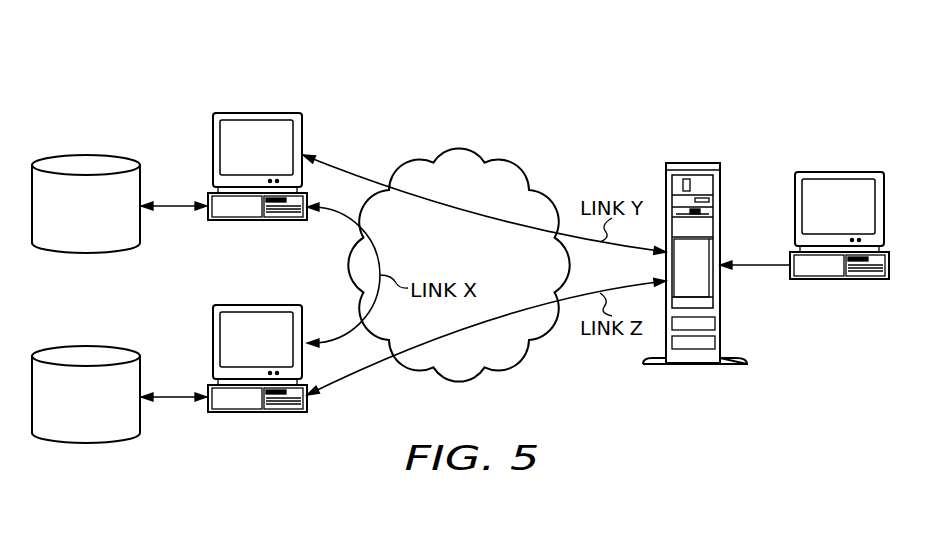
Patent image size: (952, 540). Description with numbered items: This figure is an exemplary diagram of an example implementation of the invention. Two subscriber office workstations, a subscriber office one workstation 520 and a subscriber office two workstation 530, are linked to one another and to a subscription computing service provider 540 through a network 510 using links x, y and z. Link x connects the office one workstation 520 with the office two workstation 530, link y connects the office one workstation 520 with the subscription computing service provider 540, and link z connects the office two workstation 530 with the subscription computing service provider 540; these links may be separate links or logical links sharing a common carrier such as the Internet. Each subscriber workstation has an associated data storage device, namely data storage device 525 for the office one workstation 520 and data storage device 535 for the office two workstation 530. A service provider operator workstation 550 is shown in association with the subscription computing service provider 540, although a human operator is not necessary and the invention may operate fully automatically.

The network 510 is at (488, 148).
The subscriber office 1 workstation 520 is at (255, 113).
The data storage device 525 is at (88, 155).
The subscriber office 2 workstation 530 is at (258, 412).
The data storage device 535 is at (83, 443).
The subscription computing service provider 540 is at (693, 163).
The service provider operator workstation 550 is at (837, 279).